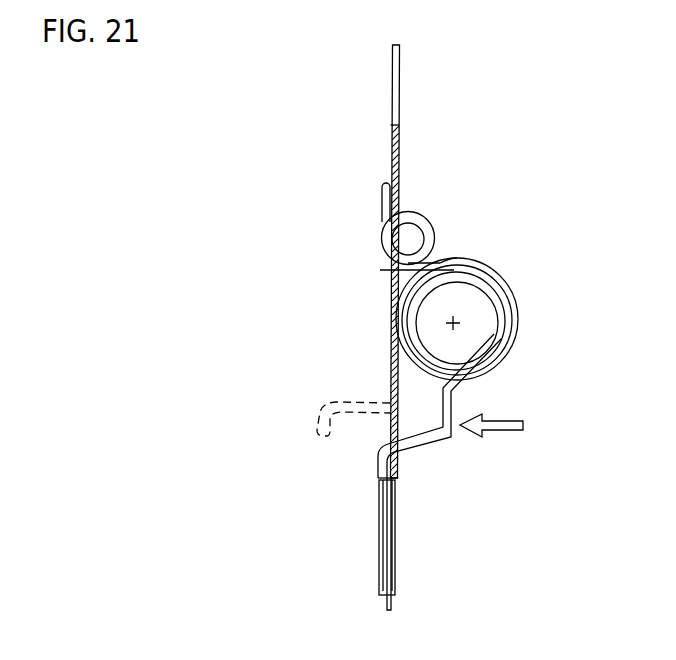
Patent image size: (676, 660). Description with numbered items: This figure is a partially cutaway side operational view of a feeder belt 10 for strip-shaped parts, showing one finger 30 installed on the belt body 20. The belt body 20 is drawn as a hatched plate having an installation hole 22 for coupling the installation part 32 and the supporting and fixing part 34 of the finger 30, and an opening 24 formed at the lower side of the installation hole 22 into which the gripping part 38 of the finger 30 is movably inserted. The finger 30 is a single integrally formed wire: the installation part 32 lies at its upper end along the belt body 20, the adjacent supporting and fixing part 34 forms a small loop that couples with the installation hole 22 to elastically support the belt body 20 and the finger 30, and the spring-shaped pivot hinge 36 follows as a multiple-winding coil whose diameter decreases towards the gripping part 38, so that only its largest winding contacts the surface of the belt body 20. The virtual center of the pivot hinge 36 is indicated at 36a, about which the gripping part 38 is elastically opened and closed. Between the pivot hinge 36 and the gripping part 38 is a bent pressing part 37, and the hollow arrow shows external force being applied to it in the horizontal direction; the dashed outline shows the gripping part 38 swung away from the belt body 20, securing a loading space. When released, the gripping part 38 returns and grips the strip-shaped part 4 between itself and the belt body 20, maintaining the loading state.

The feeder belt 10 is at (461, 143).
The belt body 20 is at (392, 82).
The installation hole 22 is at (389, 268).
The opening 24 is at (390, 397).
The finger 30 is at (493, 251).
The installation part 32 is at (381, 198).
The supporting and fixing part 34 is at (437, 224).
The pivot hinge 36 is at (500, 360).
The virtual center of the pivot hinge 36a is at (459, 320).
The bent pressing part 37 is at (451, 431).
The gripping part 38 is at (380, 462).
The strip-shaped part 4 is at (407, 560).